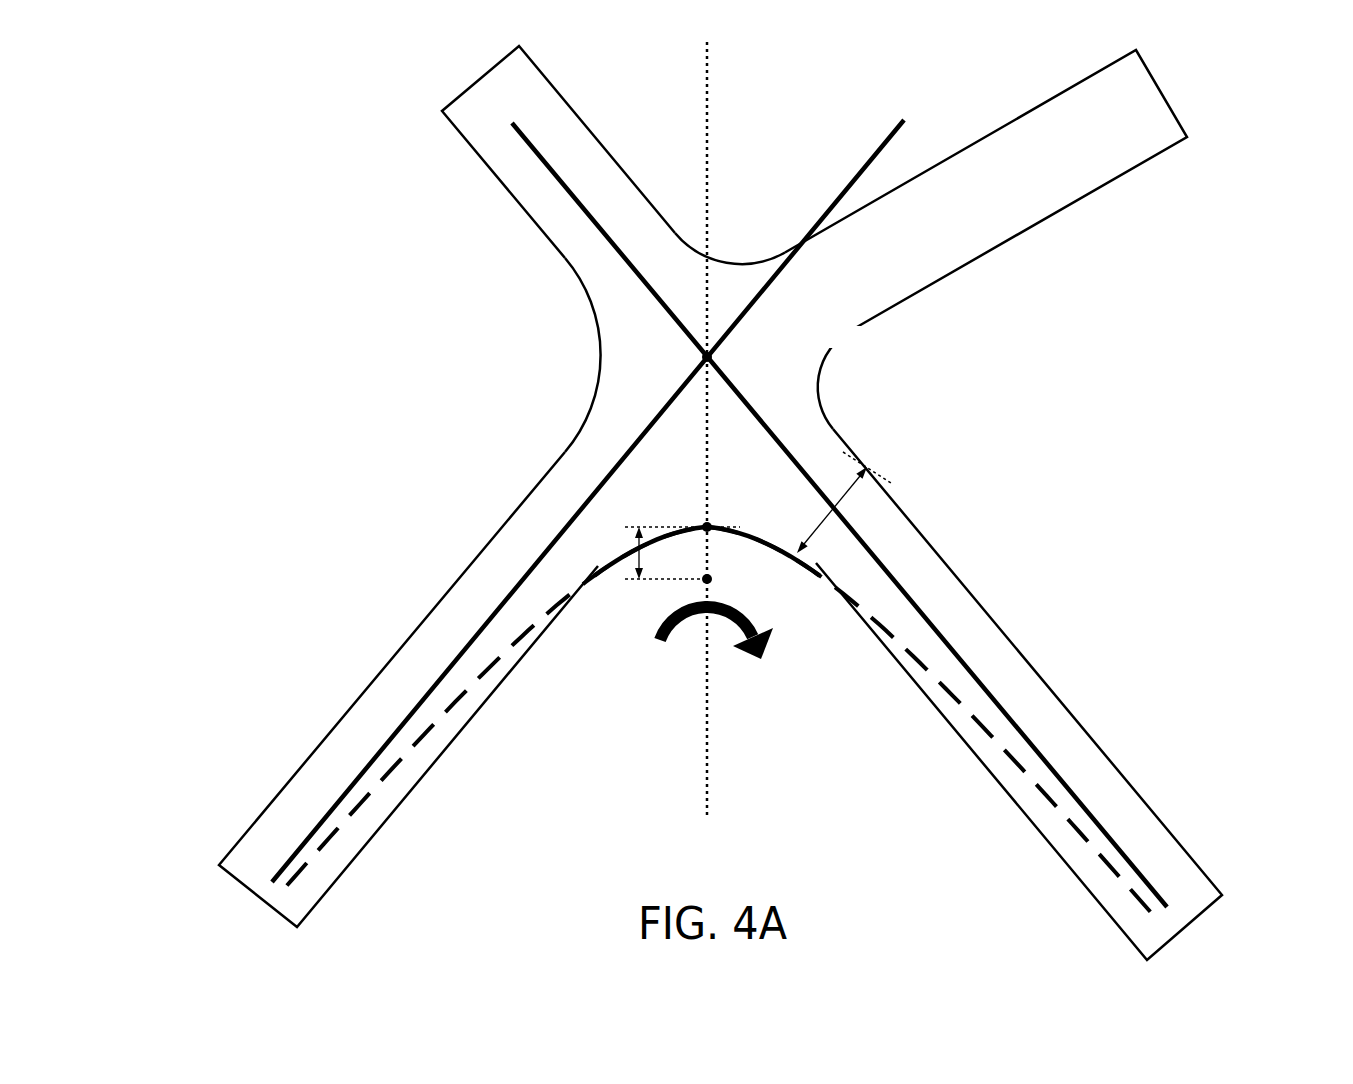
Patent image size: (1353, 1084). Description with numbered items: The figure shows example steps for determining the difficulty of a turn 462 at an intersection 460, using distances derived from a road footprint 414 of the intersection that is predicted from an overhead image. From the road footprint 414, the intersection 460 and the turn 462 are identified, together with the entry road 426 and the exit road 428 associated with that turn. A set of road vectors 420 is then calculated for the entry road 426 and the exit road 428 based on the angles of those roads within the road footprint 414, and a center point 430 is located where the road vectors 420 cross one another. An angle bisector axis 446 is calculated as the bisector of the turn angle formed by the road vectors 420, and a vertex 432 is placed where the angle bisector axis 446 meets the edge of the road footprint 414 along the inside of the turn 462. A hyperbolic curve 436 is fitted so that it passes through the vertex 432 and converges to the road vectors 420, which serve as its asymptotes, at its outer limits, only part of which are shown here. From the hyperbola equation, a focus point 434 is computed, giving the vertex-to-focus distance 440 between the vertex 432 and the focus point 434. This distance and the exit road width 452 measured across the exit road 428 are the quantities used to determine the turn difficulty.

The road footprint 414 is at (710, 503).
The road vectors 420 is at (740, 314).
The entry road 426 is at (280, 792).
The exit road 428 is at (1148, 801).
The center point 430 is at (709, 356).
The vertex 432 is at (709, 525).
The focus point 434 is at (705, 580).
The hyperbolic curve 436 is at (433, 725).
The vertex-to-focus distance 440 is at (636, 561).
The angle bisector axis 446 is at (708, 765).
The exit road width 452 is at (853, 487).
The intersection 460 is at (710, 503).
The turn 462 is at (682, 618).